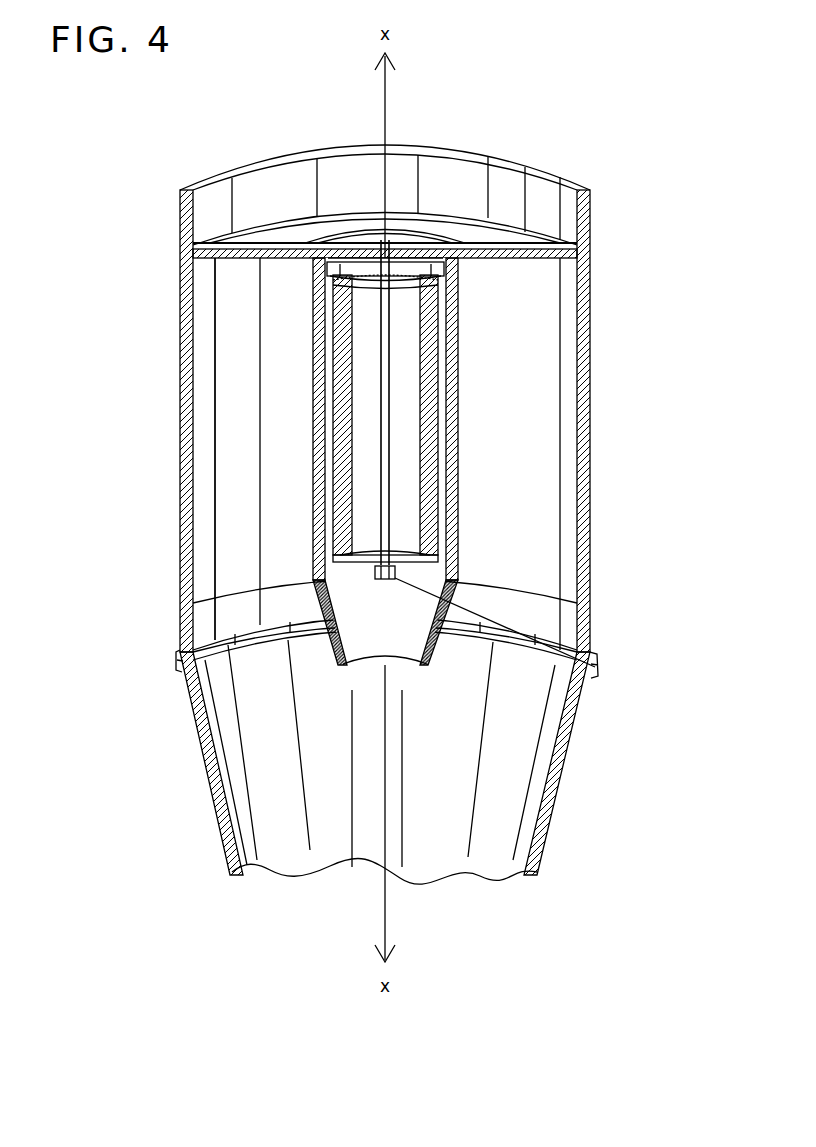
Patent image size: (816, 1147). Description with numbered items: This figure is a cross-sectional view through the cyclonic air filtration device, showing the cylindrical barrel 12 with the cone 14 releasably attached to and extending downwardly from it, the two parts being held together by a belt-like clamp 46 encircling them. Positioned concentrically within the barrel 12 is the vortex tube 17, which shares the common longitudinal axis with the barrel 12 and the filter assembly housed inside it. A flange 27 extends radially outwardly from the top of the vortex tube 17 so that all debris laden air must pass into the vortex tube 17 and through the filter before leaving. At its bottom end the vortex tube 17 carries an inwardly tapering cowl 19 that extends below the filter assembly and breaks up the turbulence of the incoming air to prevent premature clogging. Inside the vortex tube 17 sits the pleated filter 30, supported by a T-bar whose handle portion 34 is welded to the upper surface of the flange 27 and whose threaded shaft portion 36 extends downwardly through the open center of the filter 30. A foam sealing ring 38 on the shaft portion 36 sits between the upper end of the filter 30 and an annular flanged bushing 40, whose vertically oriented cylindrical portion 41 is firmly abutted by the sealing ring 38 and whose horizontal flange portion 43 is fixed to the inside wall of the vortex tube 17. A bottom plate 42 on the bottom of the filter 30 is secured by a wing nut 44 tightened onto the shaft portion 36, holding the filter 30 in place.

The cylindrical barrel 12 is at (182, 196).
The cone 14 is at (200, 740).
The vortex tube 17 is at (305, 505).
The cowl 19 is at (312, 600).
The flange 27 is at (578, 254).
The pleated filter 30 is at (438, 468).
The handle portion 34 is at (386, 240).
The shaft portion 36 is at (388, 388).
The foam sealing ring 38 is at (440, 322).
The annular flanged bushing 40 is at (443, 282).
The cylindrical portion 41 is at (320, 296).
The bottom plate 42 is at (395, 578).
The flange portion 43 is at (313, 264).
The wing nut 44 is at (598, 667).
The clamp 46 is at (600, 680).